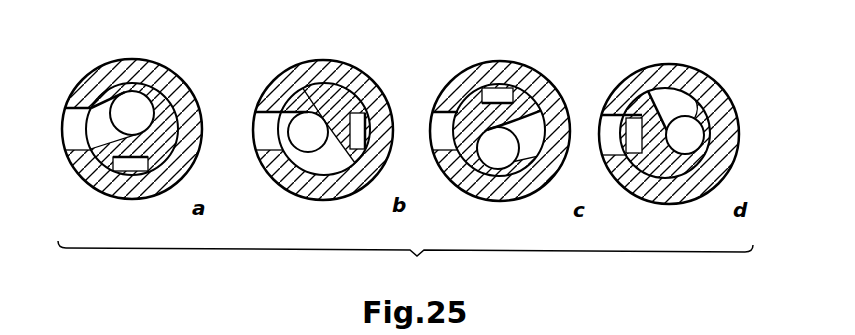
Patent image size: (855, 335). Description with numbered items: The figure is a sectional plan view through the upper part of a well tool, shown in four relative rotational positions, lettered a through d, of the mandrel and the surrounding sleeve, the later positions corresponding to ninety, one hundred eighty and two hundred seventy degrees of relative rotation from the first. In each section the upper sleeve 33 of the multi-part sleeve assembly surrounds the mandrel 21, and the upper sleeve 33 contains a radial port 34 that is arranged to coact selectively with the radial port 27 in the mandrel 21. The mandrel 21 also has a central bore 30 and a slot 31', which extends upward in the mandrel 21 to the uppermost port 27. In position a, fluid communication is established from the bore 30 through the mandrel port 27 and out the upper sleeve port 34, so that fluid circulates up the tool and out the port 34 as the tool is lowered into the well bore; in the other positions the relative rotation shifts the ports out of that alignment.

The mandrel 21 is at (167, 132).
The radial port 27 is at (103, 103).
The bore 30 is at (140, 100).
The slot 31' is at (348, 130).
The upper sleeve 33 is at (187, 169).
The radial port 34 is at (65, 127).